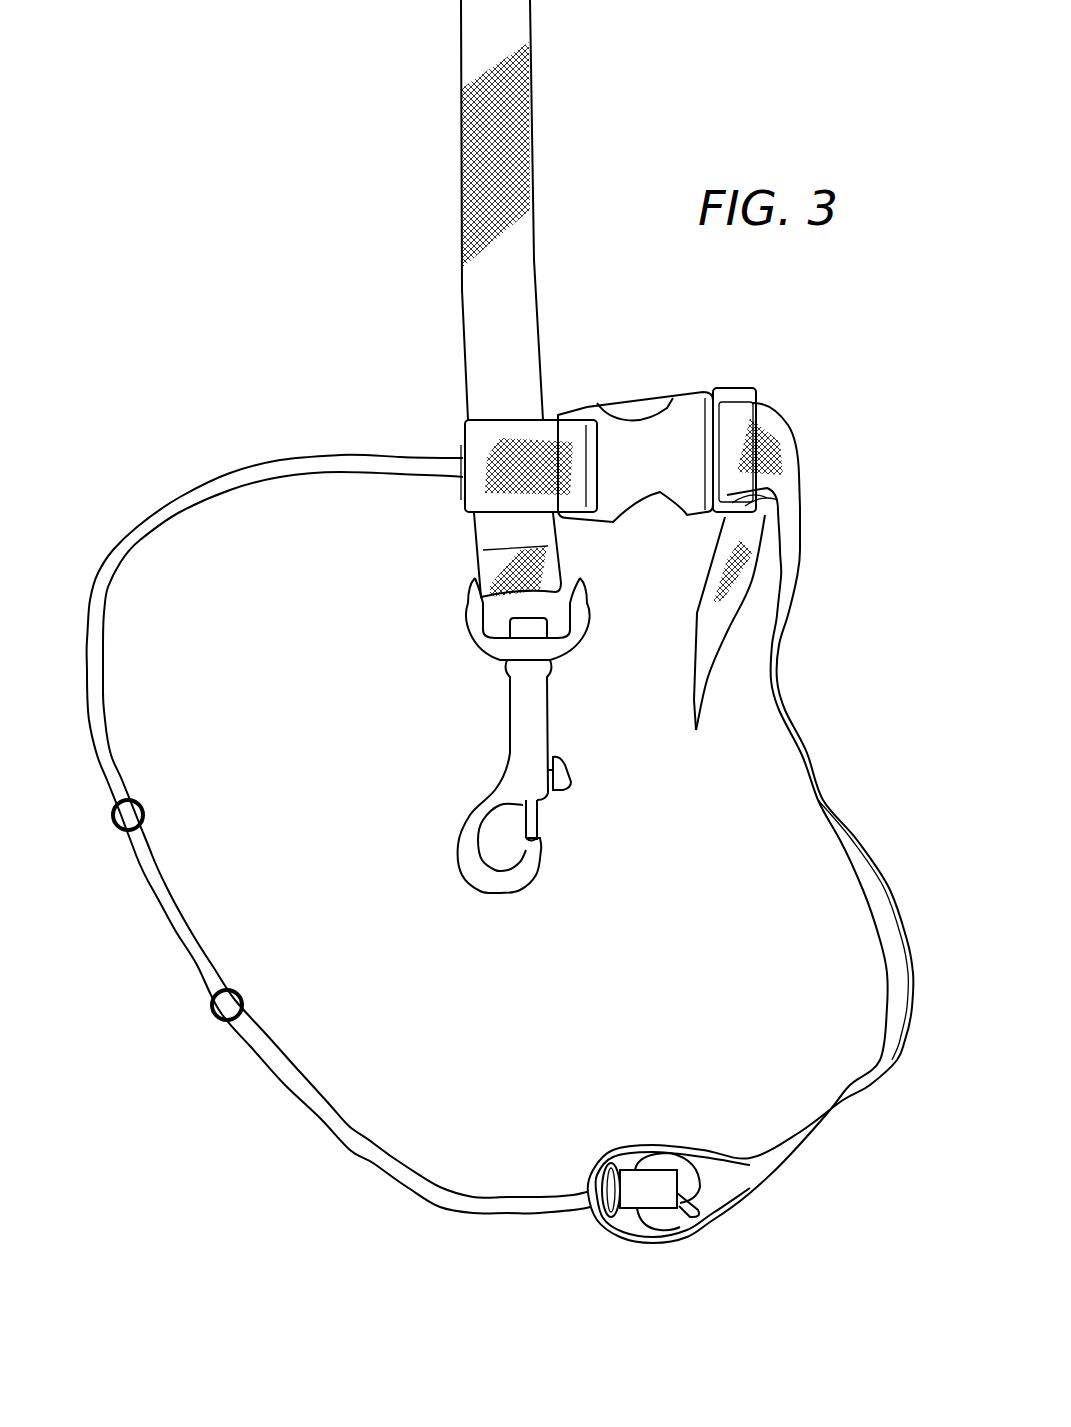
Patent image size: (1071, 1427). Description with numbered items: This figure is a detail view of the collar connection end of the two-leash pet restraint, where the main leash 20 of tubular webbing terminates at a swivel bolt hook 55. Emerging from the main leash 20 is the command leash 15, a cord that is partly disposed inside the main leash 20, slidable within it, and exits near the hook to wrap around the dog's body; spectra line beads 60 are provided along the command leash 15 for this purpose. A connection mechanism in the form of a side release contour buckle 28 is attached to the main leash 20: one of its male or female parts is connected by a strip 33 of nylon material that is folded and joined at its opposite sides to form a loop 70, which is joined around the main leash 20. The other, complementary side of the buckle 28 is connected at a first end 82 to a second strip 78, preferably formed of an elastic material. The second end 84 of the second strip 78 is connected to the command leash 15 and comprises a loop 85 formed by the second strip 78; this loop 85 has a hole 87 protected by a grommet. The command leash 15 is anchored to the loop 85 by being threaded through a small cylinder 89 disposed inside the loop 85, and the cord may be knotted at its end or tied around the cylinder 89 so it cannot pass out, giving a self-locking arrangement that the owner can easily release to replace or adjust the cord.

The command leash 15 is at (262, 1067).
The main leash 20 is at (477, 320).
The side release contour buckle 28 is at (698, 453).
The strip 33 is at (547, 433).
The swivel bolt hook 55 is at (462, 820).
The spectra line beads 60 is at (210, 1006).
The loop 70 is at (473, 430).
The second strip 78 is at (807, 752).
The first end 82 is at (750, 418).
The second end 84 is at (650, 1160).
The loop 85 is at (710, 1217).
The hole 87 is at (613, 1180).
The small cylinder 89 is at (642, 1178).